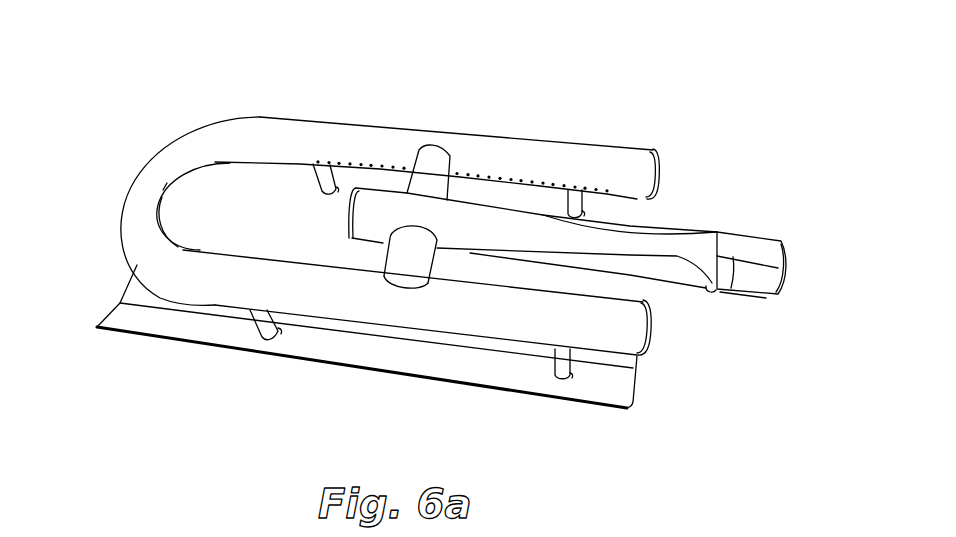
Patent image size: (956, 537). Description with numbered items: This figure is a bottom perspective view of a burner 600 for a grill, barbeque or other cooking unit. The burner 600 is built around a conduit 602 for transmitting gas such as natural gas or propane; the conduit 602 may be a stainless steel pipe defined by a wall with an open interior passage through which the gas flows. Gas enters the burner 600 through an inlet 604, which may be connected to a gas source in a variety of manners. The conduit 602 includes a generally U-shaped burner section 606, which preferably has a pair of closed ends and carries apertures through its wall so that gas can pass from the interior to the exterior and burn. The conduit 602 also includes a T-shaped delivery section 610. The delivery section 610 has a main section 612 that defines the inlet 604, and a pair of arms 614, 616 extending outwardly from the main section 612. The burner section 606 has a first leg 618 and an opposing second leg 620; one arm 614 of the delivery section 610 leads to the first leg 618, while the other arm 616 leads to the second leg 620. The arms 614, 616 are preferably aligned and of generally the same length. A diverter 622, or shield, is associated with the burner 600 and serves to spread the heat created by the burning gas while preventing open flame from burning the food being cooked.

The burner 600 is at (437, 57).
The conduit 602 is at (140, 184).
The inlet 604 is at (755, 229).
The burner section 606 is at (222, 316).
The delivery section 610 is at (546, 268).
The main section 612 is at (660, 255).
The arm 614 is at (410, 268).
The arm 616 is at (447, 172).
The first leg 618 is at (313, 310).
The second leg 620 is at (341, 135).
The diverter 622 is at (152, 323).